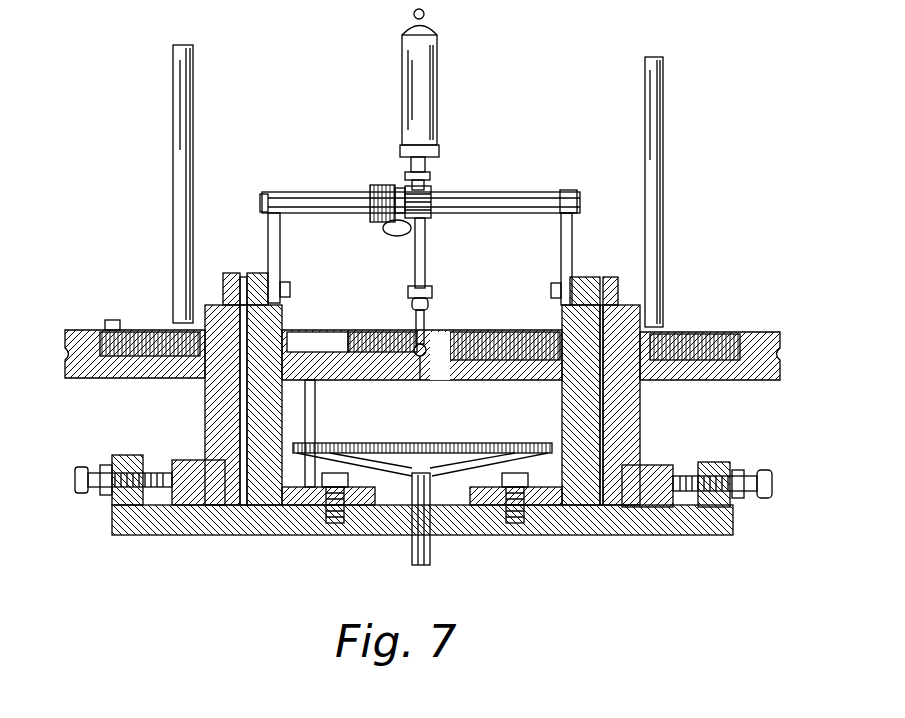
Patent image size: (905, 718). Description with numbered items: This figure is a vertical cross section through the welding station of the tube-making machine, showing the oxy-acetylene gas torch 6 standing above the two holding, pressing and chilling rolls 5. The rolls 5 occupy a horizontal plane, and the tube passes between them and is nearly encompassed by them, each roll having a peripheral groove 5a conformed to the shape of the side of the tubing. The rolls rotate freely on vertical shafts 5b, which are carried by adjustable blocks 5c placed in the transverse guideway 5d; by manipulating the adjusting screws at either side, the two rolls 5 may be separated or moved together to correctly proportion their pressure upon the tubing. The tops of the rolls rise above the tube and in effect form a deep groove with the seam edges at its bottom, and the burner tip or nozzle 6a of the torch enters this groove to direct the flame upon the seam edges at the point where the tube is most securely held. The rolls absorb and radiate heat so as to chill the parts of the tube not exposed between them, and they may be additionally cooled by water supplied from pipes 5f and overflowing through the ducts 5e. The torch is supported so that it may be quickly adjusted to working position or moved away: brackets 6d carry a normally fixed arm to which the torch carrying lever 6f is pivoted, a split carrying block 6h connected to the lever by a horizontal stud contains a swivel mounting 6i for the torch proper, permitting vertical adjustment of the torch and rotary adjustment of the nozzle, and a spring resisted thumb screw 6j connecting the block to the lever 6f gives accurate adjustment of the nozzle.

The holding, pressing and chilling rolls 5 is at (372, 380).
The peripheral groove 5a is at (780, 360).
The vertical shafts 5b is at (612, 441).
The adjustable blocks 5c is at (192, 512).
The transverse guideway 5d is at (385, 507).
The ducts 5e is at (232, 412).
The pipes 5f is at (195, 137).
The oxy-acetylene gas torch 6 is at (430, 99).
The burner tip or nozzle 6a is at (434, 312).
The brackets 6d is at (268, 243).
The torch carrying lever 6f is at (370, 192).
The split carrying block 6h is at (428, 192).
The swivel mounting 6i is at (400, 192).
The spring resisted thumb screw 6j is at (393, 238).